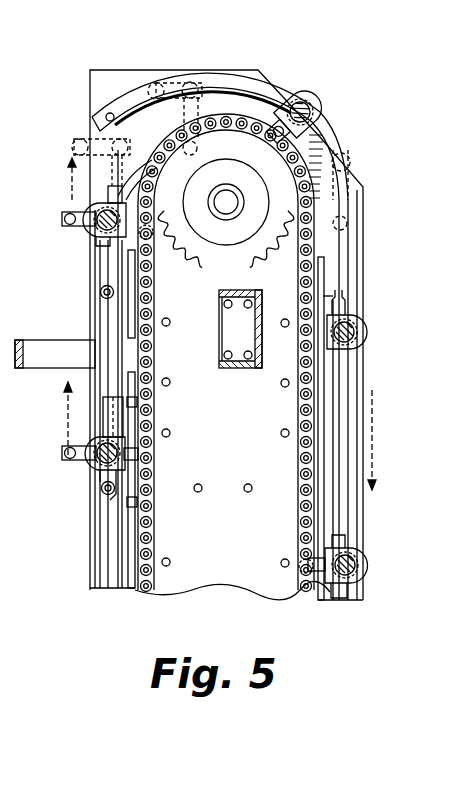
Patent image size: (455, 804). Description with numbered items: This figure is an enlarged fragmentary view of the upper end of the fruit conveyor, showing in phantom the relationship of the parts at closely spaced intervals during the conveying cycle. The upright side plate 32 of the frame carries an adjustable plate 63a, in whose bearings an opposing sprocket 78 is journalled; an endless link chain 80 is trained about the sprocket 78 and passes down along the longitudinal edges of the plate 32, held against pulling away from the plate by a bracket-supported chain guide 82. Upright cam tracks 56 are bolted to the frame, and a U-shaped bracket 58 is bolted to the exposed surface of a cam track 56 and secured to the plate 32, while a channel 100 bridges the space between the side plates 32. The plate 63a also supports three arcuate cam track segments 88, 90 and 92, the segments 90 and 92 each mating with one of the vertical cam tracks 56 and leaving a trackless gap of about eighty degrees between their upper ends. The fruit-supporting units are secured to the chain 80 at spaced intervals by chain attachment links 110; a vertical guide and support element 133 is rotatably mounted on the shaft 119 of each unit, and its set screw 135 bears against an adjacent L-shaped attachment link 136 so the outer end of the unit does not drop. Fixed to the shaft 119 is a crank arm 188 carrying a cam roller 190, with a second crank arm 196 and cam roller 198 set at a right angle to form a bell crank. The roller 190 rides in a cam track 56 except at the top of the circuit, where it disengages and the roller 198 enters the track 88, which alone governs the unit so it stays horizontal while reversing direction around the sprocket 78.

The upright side plate 32 is at (240, 435).
The upright cam track 56 is at (357, 513).
The U-shaped bracket 58 is at (58, 342).
The additional plate 63a is at (129, 58).
The sprocket 78 is at (246, 268).
The endless link chain 80 is at (153, 356).
The chain guide 82 is at (326, 388).
The arcuate cam track segment 88 is at (112, 98).
The arcuate cam track segment 90 is at (131, 173).
The arcuate cam track segment 92 is at (346, 208).
The channel 100 is at (239, 366).
The chain attachment link 110 is at (150, 229).
The shaft 119 is at (312, 110).
The vertical guide and support element 133 is at (103, 481).
The set screw 135 is at (100, 501).
The L-shaped attachment link 136 is at (150, 399).
The crank arm 188 is at (106, 272).
The cam roller 190 is at (104, 292).
The second crank arm 196 is at (90, 240).
The cam roller 198 is at (157, 76).